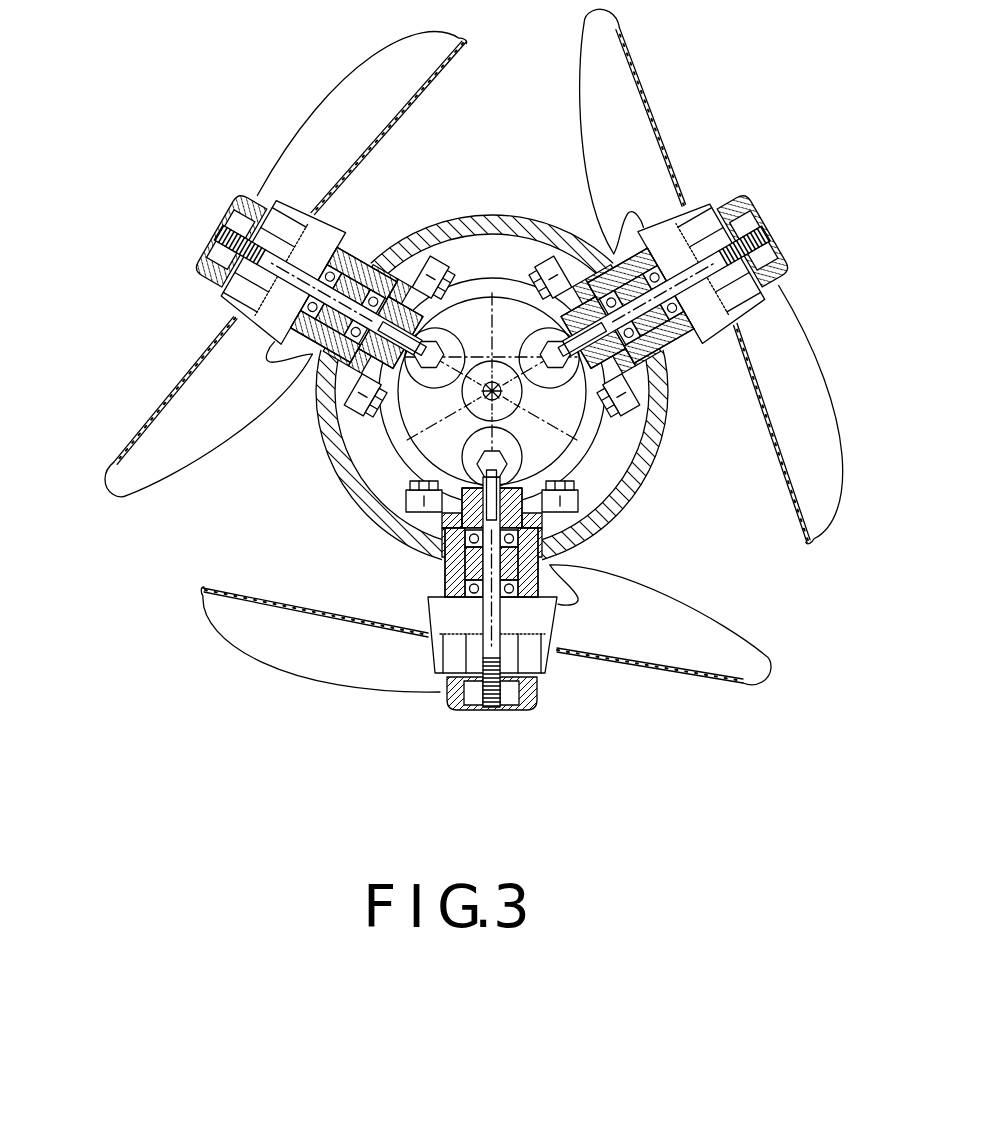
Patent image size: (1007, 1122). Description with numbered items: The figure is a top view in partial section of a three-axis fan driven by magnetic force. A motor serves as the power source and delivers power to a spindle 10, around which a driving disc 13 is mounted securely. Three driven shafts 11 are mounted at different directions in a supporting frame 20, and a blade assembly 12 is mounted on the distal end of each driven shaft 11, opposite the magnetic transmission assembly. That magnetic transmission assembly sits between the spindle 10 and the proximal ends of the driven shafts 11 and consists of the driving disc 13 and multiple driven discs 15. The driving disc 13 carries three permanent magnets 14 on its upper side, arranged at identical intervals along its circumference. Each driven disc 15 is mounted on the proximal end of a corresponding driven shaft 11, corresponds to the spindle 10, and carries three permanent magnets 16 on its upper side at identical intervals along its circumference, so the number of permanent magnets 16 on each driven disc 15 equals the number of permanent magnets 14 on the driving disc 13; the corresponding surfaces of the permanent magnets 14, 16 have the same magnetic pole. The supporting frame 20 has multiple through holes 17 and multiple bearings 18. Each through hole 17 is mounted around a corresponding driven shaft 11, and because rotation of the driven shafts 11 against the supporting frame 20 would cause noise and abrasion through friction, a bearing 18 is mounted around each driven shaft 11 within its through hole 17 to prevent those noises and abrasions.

The spindle 10 is at (471, 300).
The driven shaft 11 is at (372, 258).
The blade assembly 12 is at (197, 378).
The driving disc 13 is at (486, 380).
The permanent magnet 14 is at (433, 388).
The driven disc 15 is at (570, 236).
The permanent magnet 16 is at (413, 500).
The through hole 17 is at (350, 402).
The bearing 18 is at (460, 588).
The supporting frame 20 is at (660, 445).